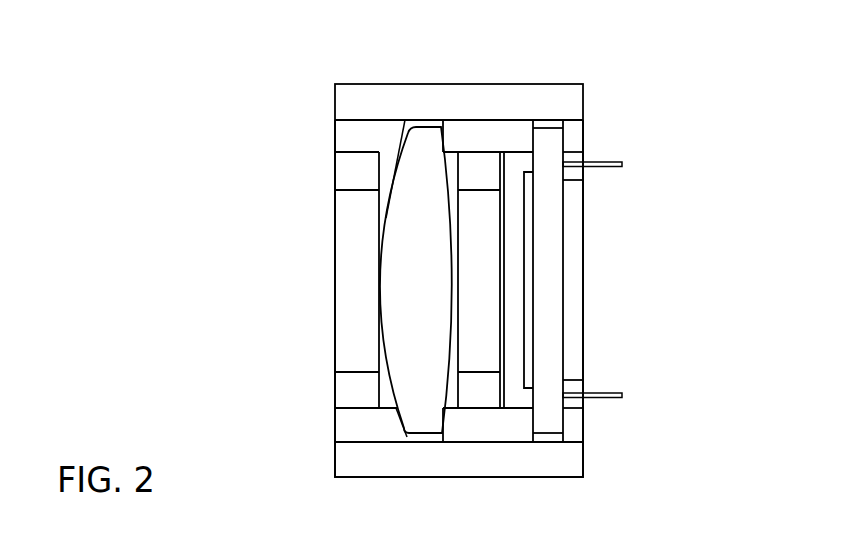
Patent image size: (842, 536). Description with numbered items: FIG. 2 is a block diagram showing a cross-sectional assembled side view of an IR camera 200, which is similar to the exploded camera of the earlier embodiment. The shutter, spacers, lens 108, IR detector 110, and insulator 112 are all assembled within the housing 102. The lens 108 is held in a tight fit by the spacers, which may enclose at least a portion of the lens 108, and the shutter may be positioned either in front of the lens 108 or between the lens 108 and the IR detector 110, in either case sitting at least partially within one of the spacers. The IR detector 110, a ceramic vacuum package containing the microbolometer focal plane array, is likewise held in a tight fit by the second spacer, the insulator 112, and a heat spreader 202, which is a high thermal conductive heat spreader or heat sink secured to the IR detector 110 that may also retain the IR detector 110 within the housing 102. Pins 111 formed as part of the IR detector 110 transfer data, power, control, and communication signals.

The IR camera 200 is at (742, 376).
The heat spreader 202 is at (585, 278).
The housing 102 is at (347, 462).
The lens 108 is at (426, 147).
The IR detector 110 is at (547, 142).
The pins 111 is at (619, 417).
The insulator 112 is at (577, 139).